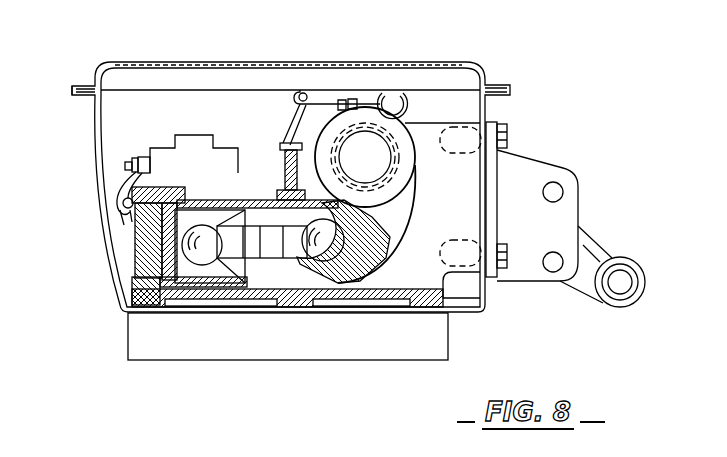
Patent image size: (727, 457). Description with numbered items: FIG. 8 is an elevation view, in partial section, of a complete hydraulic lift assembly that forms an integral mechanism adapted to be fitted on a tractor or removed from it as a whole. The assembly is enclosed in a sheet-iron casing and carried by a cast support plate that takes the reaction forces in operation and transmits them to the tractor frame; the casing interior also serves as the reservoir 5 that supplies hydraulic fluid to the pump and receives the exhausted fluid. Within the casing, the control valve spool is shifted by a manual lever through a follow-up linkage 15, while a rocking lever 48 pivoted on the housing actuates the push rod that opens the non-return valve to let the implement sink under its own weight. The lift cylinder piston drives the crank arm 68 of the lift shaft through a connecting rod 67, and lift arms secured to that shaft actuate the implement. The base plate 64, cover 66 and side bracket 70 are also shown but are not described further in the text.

The reservoir 5 is at (110, 163).
The follow-up linkage 15 is at (324, 96).
The rocking lever 48 is at (300, 132).
The bottom plate 64 is at (393, 303).
The cover 66 is at (378, 63).
The connecting rod 67 is at (262, 240).
The crank arm 68 is at (390, 208).
The mounting bracket 70 is at (582, 258).